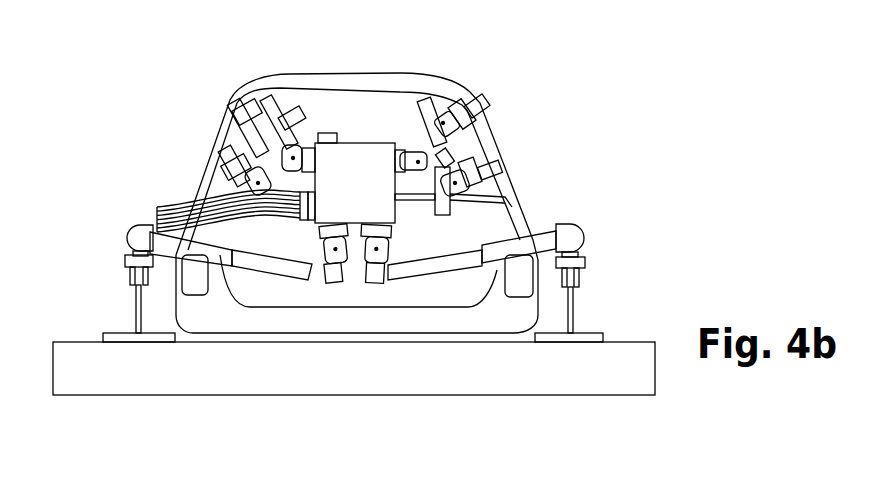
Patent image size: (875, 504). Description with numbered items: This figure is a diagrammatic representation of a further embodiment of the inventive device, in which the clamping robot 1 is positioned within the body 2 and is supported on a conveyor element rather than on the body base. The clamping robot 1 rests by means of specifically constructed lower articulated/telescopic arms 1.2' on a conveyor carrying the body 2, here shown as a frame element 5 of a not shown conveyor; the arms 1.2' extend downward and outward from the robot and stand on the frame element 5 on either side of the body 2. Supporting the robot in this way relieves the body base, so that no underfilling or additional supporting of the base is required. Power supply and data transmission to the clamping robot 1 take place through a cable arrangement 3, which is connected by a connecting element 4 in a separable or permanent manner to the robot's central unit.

The clamping robot 1 is at (372, 136).
The lower articulated/telescopic arms 1.2' is at (412, 224).
The body 2 is at (548, 197).
The cable arrangement 3 is at (178, 210).
The connecting element 4 is at (310, 228).
The frame element 5 is at (640, 341).